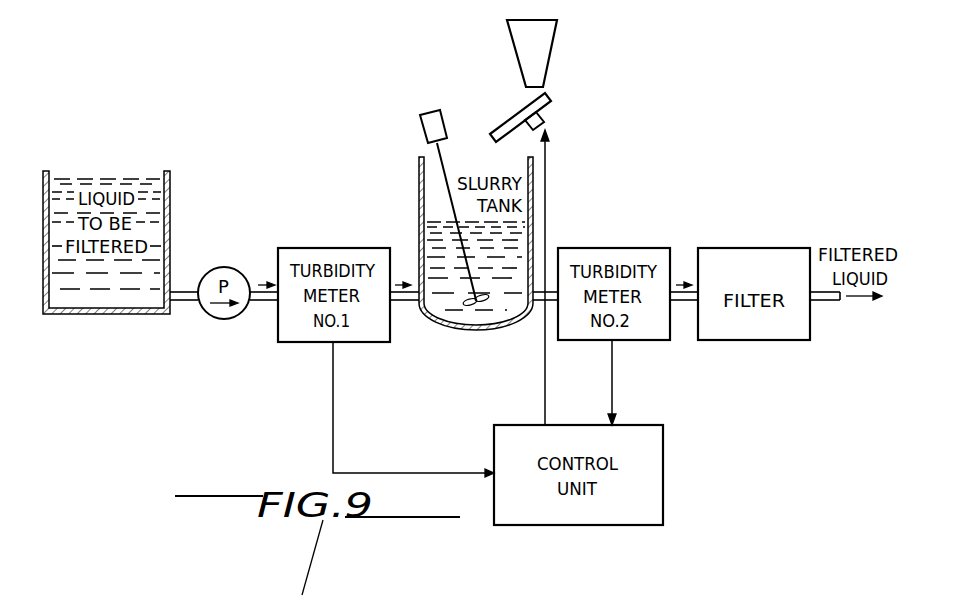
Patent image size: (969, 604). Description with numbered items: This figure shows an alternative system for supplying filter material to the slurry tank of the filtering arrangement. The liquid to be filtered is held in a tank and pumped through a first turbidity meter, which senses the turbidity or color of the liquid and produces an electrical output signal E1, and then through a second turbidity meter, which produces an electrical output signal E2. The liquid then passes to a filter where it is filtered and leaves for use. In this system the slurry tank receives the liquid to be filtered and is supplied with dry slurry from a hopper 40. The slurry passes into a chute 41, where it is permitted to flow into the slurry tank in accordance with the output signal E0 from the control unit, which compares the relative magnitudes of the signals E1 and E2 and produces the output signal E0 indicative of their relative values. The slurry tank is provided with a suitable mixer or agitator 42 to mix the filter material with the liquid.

The hopper 40 is at (512, 49).
The chute 41 is at (509, 121).
The mixer or agitator 42 is at (421, 131).
The output signal E1 is at (395, 473).
The output signal E0 is at (545, 395).
The output signal E2 is at (613, 393).